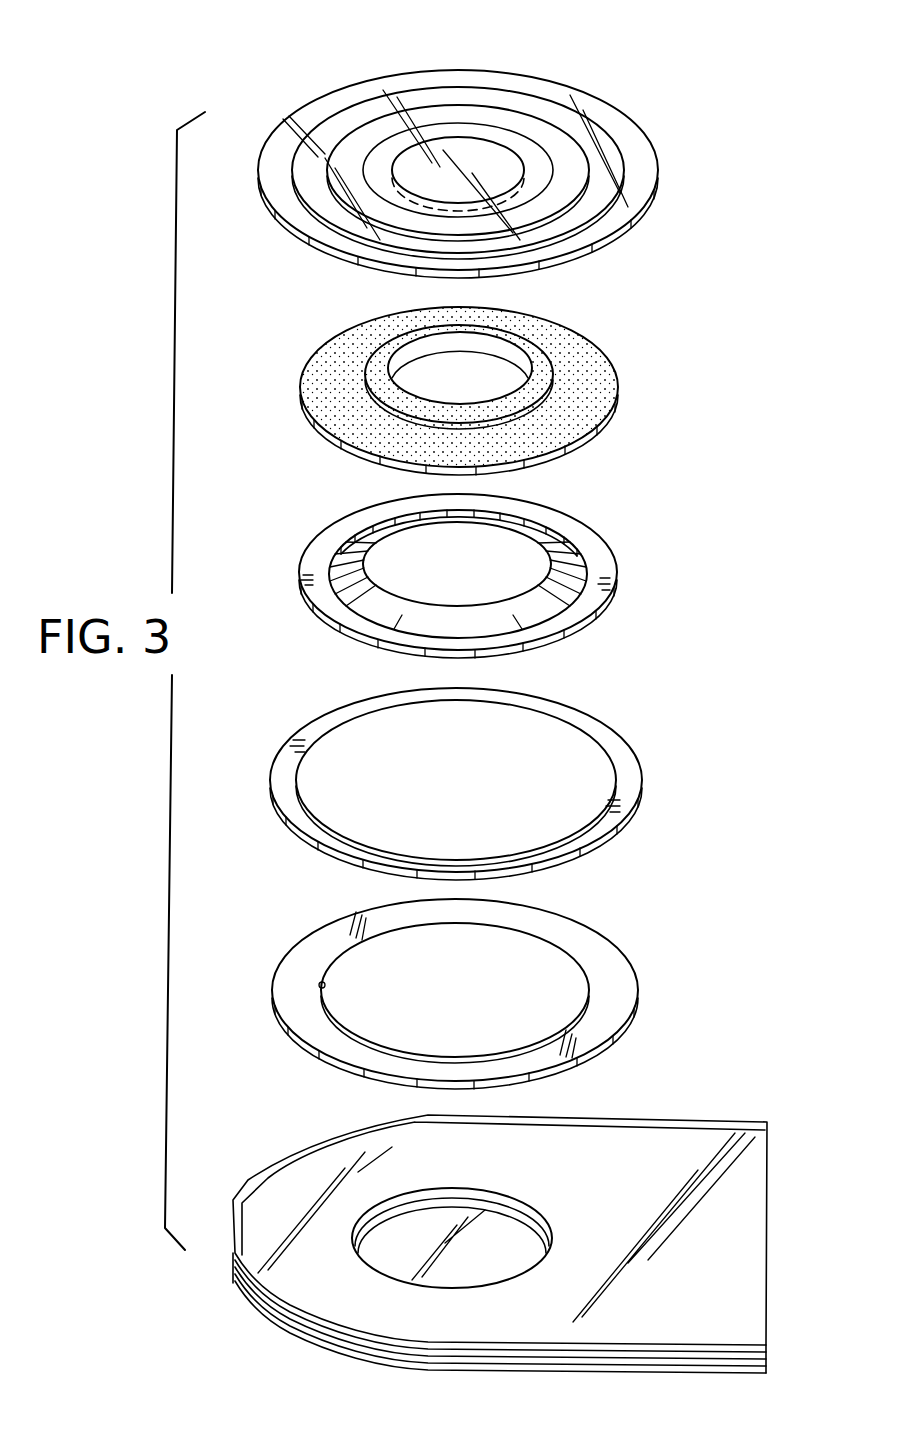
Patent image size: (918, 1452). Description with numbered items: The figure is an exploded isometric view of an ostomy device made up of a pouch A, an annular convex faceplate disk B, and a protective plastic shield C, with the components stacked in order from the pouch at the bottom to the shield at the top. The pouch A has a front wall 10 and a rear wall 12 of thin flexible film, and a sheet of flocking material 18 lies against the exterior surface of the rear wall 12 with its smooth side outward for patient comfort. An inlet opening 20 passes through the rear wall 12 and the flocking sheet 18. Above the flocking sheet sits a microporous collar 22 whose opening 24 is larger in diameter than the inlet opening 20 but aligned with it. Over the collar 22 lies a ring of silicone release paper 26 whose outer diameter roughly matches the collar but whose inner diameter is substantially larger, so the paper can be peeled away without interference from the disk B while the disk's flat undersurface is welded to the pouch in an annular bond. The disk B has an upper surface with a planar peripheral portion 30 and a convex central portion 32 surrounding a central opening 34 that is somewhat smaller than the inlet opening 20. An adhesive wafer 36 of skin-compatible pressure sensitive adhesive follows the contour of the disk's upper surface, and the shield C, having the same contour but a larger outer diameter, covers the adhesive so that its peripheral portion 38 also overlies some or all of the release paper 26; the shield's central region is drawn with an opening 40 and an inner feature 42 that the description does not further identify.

The front wall 10 is at (499, 1267).
The rear wall 12 is at (502, 1207).
The flocking material 18 is at (722, 1270).
The inlet opening 20 is at (415, 1227).
The microporous collar 22 is at (628, 995).
The opening 24 is at (318, 983).
The silicone release paper 26 is at (628, 778).
The planar peripheral portion 30 is at (318, 548).
The convex central portion 32 is at (565, 565).
The central opening 34 is at (507, 523).
The adhesive wafer 36 is at (610, 372).
The peripheral portion 38 is at (632, 132).
The central opening of cap 40 is at (503, 150).
The inner lip of cap opening 42 is at (431, 168).
The pouch A is at (706, 1115).
The annular convex faceplate disk B is at (617, 601).
The protective plastic shield C is at (660, 186).